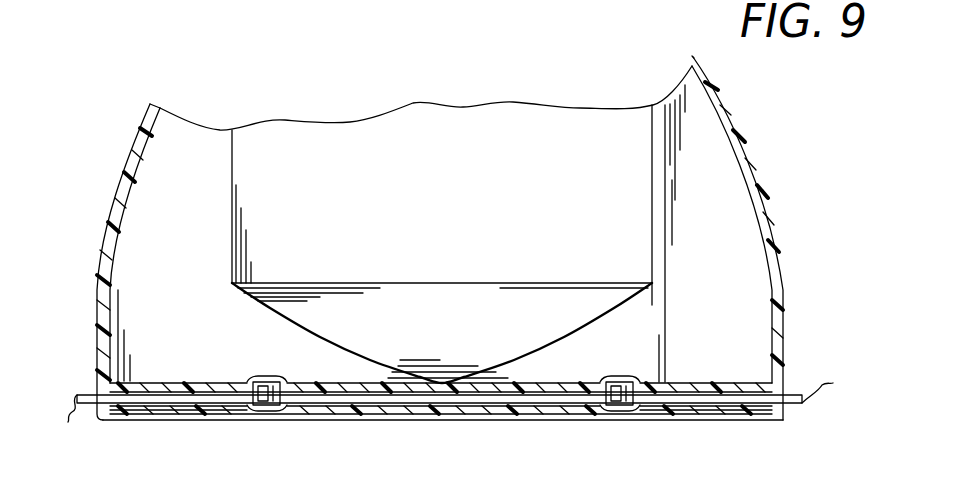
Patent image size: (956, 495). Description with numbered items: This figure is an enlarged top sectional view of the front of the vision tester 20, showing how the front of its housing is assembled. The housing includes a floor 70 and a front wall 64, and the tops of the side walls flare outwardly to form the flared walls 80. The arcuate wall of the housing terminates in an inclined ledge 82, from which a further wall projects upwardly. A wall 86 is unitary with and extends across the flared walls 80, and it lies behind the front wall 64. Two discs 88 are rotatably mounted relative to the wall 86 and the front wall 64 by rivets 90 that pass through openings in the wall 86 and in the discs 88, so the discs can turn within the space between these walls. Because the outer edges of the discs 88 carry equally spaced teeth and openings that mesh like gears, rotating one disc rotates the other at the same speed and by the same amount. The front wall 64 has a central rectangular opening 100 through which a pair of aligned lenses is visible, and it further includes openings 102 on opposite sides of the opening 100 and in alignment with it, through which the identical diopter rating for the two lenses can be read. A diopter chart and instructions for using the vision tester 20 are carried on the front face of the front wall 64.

The vision tester 20 is at (794, 245).
The front wall 64 is at (736, 422).
The floor 70 is at (439, 202).
The flared walls 80 is at (177, 275).
The inclined ledge 82 is at (439, 335).
The wall 86 is at (745, 350).
The discs 88 is at (437, 413).
The rivets 90 is at (283, 377).
The opening 100 is at (365, 418).
The openings 102 is at (210, 415).